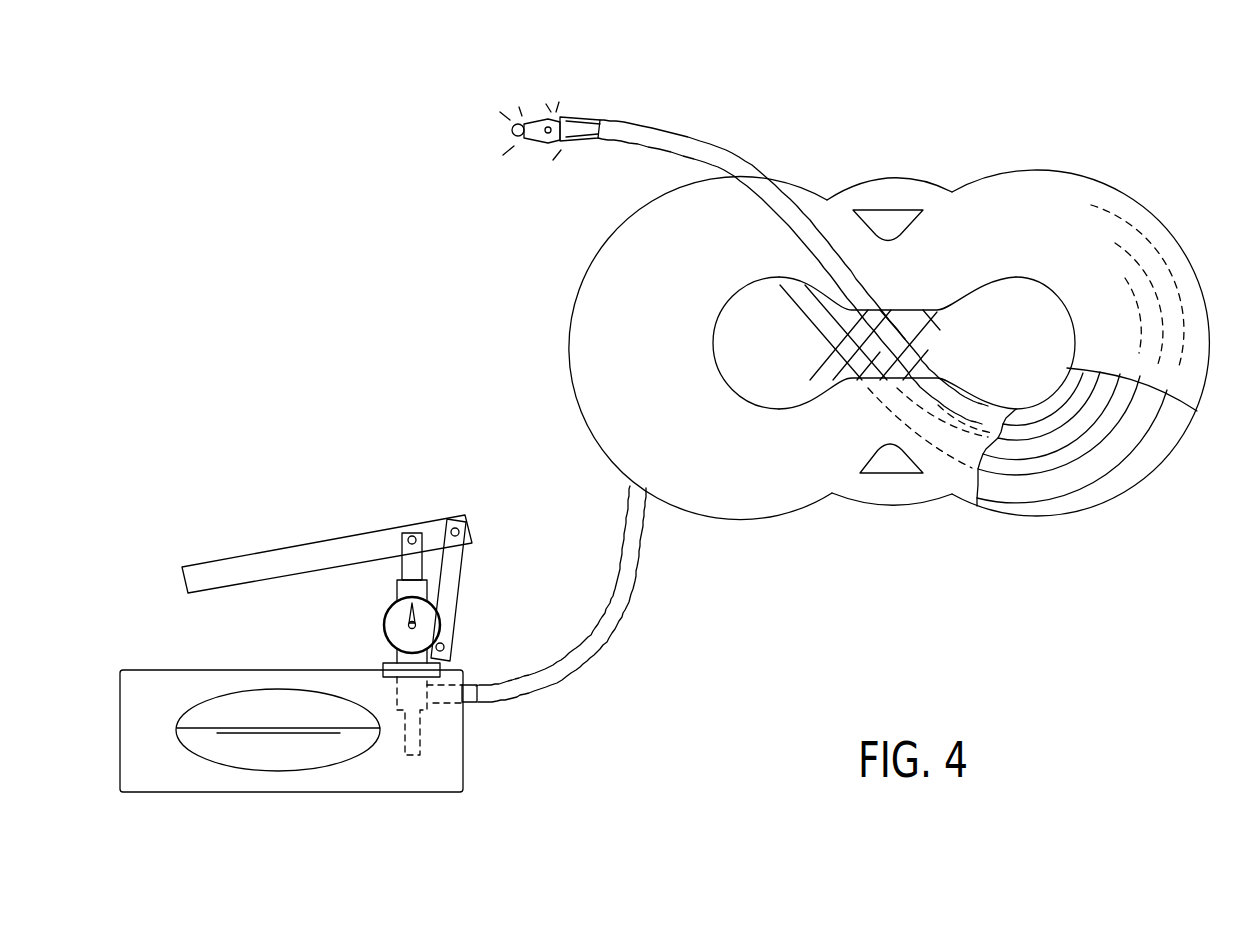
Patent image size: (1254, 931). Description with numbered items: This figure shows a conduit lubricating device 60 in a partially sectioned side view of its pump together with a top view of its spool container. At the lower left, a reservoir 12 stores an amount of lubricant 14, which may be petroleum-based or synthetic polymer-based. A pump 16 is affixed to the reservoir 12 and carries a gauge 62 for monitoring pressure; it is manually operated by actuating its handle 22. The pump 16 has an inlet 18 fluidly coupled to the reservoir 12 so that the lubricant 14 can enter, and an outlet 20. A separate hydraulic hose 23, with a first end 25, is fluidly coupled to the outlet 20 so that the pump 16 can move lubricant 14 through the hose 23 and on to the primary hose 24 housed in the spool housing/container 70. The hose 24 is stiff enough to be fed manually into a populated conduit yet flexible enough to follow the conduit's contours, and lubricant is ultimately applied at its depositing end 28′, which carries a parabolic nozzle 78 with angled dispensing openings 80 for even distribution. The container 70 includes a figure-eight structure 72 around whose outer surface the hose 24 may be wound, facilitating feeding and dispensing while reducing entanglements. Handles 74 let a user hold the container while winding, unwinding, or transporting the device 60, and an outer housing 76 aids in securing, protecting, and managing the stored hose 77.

The lubricant reservoir 12 is at (143, 659).
The lubricant 14 is at (288, 762).
The pump 16 is at (407, 519).
The inlet 18 is at (413, 757).
The outlet 20 is at (470, 683).
The handle 22 is at (237, 565).
The hydraulic hose 23 is at (635, 620).
The hose 24 is at (938, 363).
The first end 25 is at (504, 709).
The depositing end 28′ is at (627, 124).
The conduit lubricating device 60 is at (291, 195).
The gauge 62 is at (385, 615).
The spool housing/container 70 is at (1096, 517).
The figure-eight structure 72 is at (1024, 167).
The handles 74 is at (884, 190).
The outer housing 76 is at (1048, 240).
The stored hose 77 is at (1093, 470).
The nozzle 78 is at (504, 91).
The angled dispensing openings 80 is at (527, 142).